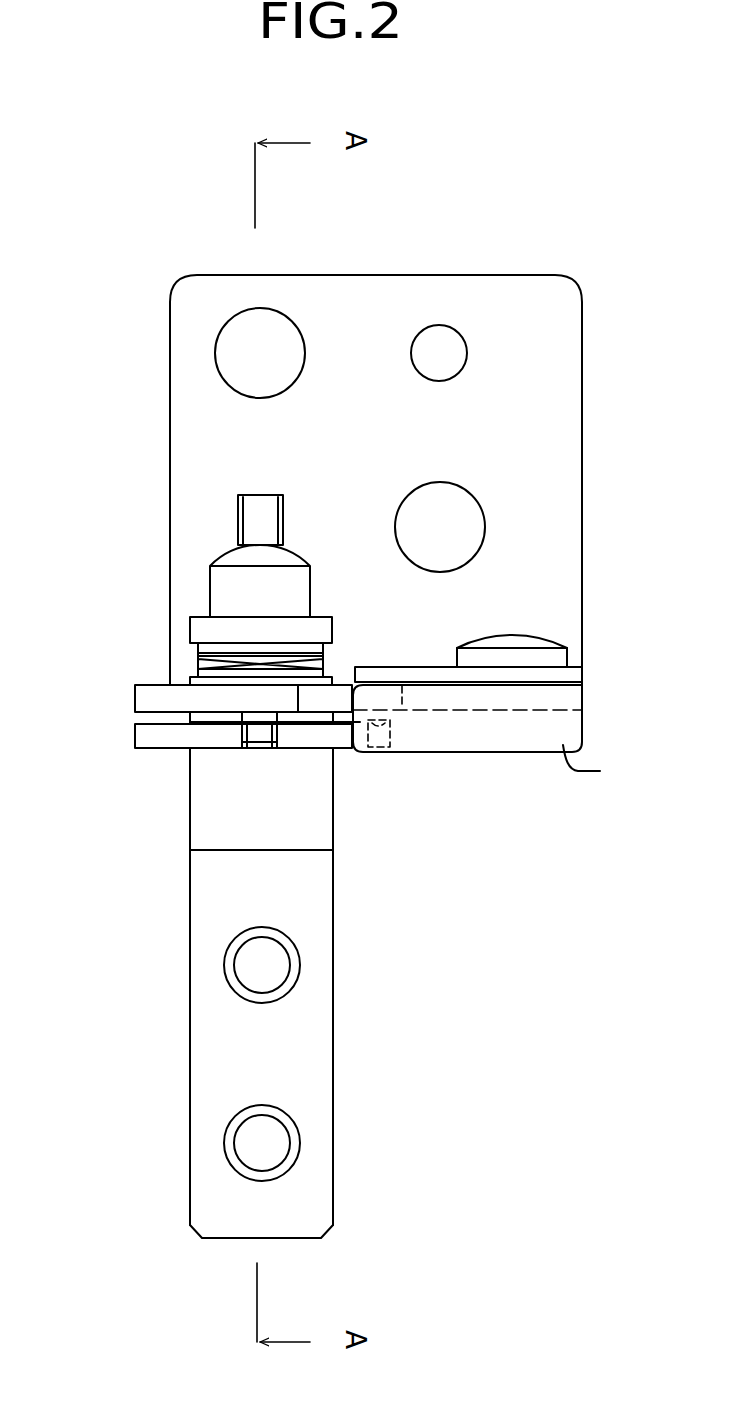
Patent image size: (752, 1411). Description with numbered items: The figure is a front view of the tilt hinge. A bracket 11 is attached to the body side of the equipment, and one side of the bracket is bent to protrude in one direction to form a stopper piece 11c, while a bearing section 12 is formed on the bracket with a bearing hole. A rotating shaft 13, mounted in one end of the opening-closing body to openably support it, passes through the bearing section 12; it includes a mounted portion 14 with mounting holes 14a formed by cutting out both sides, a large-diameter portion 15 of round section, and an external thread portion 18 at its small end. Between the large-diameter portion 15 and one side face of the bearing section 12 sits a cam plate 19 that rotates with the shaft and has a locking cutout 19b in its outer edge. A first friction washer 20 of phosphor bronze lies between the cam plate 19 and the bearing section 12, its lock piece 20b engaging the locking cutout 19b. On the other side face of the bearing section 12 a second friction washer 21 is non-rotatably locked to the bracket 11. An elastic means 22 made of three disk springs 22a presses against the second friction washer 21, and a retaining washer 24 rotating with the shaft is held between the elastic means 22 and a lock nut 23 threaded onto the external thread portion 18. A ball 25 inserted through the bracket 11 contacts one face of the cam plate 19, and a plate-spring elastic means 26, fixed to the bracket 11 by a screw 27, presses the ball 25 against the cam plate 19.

The bracket 11 is at (562, 452).
The stopper piece 11c is at (612, 765).
The bearing section 12 is at (155, 698).
The rotating shaft 13 is at (236, 993).
The mounted portion 14 is at (315, 1062).
The mounting holes 14a is at (285, 1145).
The large-diameter portion 15 is at (198, 830).
The external thread portion 18 is at (238, 513).
The cam plate 19 is at (190, 745).
The locking cutout 19b is at (248, 742).
The first friction washer 20 is at (195, 717).
The lock piece 20b is at (265, 730).
The second friction washer 21 is at (193, 682).
The elastic means 22 is at (188, 662).
The disk springs 22a is at (327, 666).
The lock nut 23 is at (293, 577).
The retaining washer 24 is at (202, 633).
The ball 25 is at (395, 720).
The elastic means 26 is at (422, 676).
The screw 27 is at (553, 645).